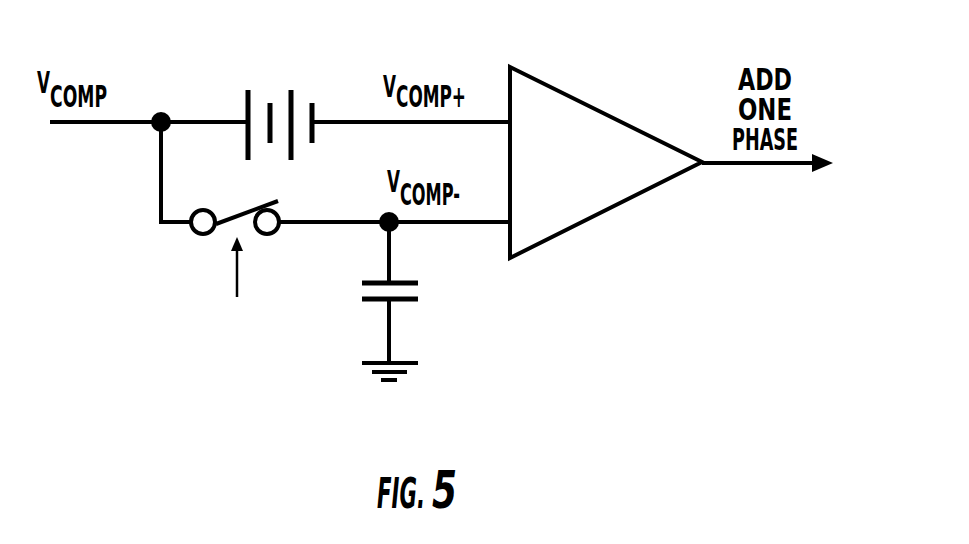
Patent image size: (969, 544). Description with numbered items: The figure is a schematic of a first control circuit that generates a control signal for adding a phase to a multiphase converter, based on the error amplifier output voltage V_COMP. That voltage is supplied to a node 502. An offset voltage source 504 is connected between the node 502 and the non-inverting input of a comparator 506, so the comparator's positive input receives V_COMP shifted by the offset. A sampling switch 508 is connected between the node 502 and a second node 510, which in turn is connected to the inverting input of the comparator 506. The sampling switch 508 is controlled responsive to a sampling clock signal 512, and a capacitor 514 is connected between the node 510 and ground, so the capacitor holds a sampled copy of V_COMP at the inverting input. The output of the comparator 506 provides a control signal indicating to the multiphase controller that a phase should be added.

The node 502 is at (155, 130).
The offset voltage source 504 is at (293, 100).
The comparator 506 is at (618, 208).
The sampling switch 508 is at (197, 237).
The node 510 is at (352, 223).
The sampling clock signal 512 is at (210, 347).
The capacitor 514 is at (390, 313).